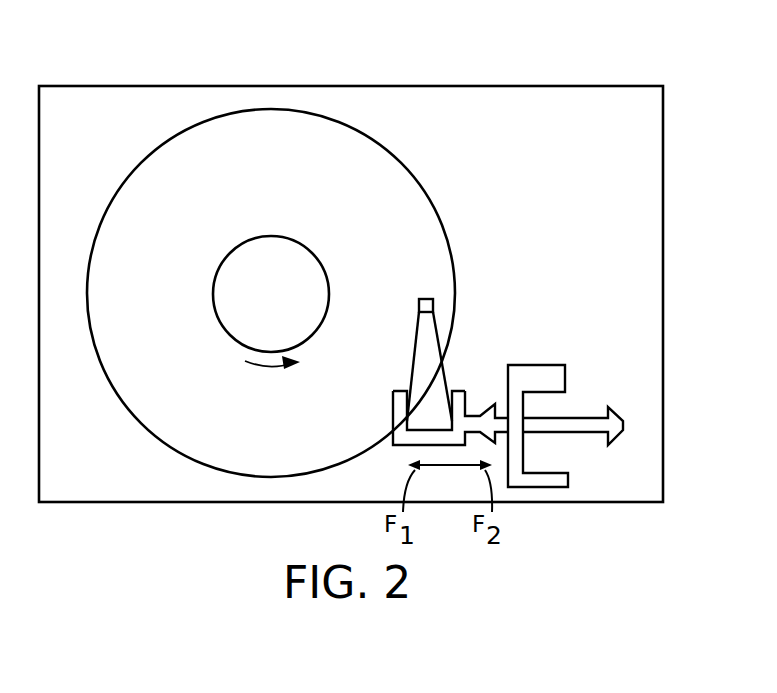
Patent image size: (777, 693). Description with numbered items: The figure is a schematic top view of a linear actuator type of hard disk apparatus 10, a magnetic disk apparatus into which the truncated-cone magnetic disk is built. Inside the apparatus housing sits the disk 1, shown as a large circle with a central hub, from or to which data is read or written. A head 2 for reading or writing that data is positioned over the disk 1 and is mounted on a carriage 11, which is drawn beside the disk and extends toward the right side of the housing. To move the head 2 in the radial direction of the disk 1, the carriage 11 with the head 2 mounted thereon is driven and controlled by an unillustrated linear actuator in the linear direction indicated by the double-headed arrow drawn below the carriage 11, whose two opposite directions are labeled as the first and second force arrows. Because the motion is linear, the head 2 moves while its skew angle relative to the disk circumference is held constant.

The hard disk apparatus 10 is at (349, 84).
The disk 1 is at (303, 293).
The head 2 is at (428, 299).
The carriage 11 is at (457, 391).